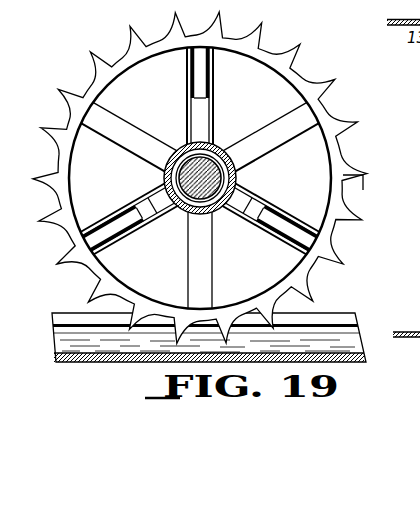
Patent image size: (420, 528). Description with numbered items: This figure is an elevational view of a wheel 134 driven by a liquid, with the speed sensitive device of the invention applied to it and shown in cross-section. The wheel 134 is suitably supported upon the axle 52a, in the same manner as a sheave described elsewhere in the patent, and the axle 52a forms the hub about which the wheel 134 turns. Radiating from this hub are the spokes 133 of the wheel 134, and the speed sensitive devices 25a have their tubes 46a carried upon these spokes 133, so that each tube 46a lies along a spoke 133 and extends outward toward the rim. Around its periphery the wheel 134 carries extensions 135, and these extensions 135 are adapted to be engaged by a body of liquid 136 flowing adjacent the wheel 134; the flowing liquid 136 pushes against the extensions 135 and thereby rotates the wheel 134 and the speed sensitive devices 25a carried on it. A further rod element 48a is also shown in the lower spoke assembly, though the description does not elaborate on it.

The speed sensitive device 25a is at (209, 118).
The tube 46a is at (208, 99).
The lower spoke rod assembly 48a is at (281, 223).
The axle 52a is at (188, 146).
The spoke 133 is at (273, 140).
The wheel 134 is at (325, 127).
The extension 135 is at (357, 167).
The body of liquid 136 is at (338, 323).